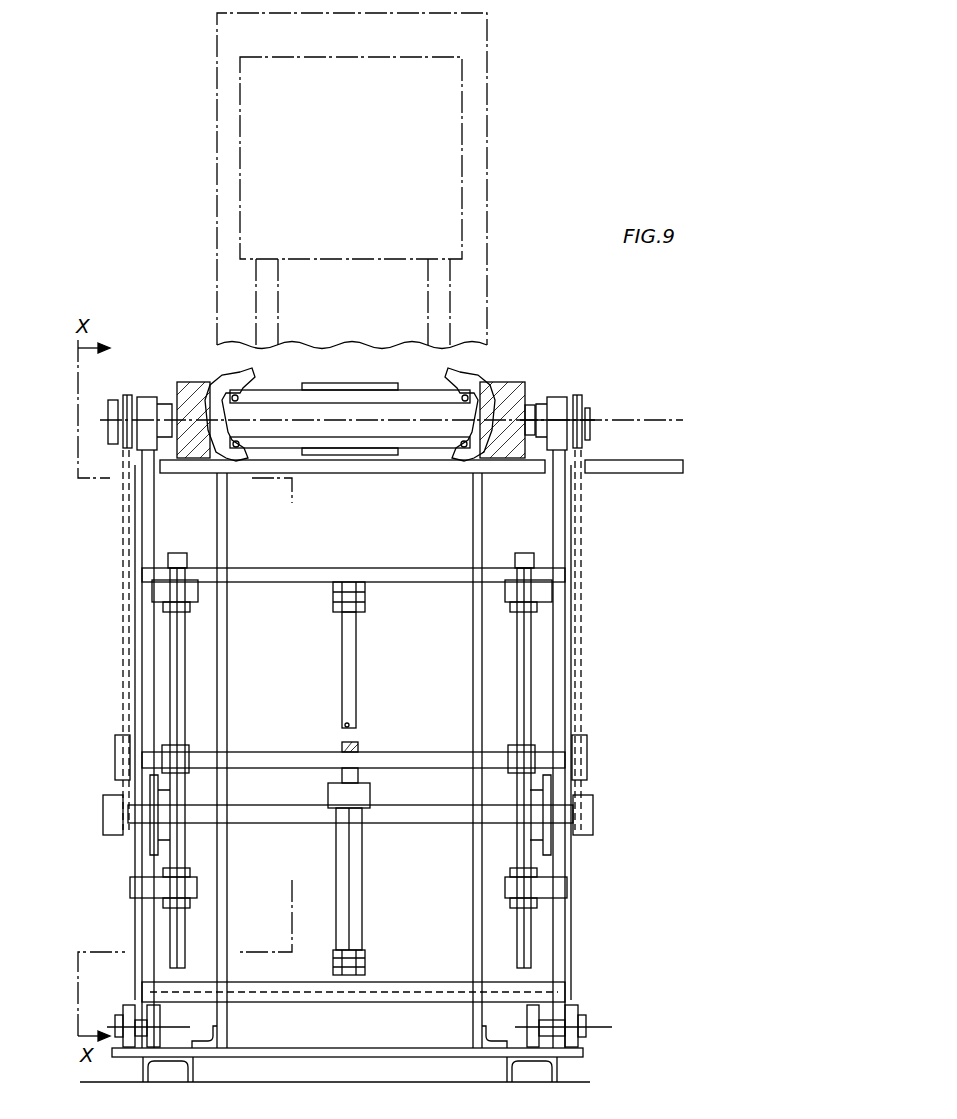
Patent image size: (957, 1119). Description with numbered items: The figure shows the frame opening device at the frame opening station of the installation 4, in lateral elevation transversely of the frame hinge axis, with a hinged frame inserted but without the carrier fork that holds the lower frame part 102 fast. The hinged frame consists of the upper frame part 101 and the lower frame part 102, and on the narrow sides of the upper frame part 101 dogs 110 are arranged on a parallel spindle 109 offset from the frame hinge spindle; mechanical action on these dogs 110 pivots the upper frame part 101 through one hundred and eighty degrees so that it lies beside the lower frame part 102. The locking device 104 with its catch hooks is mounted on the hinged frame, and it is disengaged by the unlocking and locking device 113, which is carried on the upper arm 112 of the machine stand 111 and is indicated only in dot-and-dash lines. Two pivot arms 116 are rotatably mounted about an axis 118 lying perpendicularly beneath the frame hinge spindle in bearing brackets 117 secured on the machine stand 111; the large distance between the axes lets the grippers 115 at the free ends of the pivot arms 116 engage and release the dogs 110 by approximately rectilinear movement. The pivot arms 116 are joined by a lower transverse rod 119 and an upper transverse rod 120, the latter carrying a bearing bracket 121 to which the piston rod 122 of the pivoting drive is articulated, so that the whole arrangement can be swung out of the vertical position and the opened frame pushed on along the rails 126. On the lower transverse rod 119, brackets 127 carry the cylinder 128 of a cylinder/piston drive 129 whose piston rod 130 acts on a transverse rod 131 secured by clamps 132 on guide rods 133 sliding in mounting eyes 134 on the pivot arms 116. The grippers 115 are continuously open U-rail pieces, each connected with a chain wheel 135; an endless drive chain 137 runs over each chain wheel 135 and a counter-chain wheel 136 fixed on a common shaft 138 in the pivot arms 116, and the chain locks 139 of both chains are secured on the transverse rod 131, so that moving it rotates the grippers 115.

The installation 4 is at (526, 380).
The upper frame part 101 is at (505, 392).
The lower frame part 102 is at (528, 398).
The locking device 104 is at (205, 370).
The parallel spindle 109 is at (663, 420).
The dogs 110 is at (588, 421).
The machine stand 111 is at (228, 652).
The upper arm 112 is at (482, 192).
The unlocking and locking device 113 is at (442, 300).
The grippers 115 is at (162, 397).
The pivot arms 116 is at (140, 660).
The bearing brackets 117 is at (155, 1010).
The axis 118 is at (598, 1030).
The lower transverse rod 119 is at (383, 1003).
The upper transverse rod 120 is at (362, 568).
The bearing bracket 121 is at (367, 601).
The piston rod 122 is at (357, 648).
The rails 126 is at (418, 474).
The brackets 127 is at (367, 955).
The cylinder 128 is at (360, 908).
The cylinder/piston drive 129 is at (366, 843).
The piston rod 130 is at (358, 778).
The transverse rod 131 is at (390, 752).
The clamps 132 is at (182, 752).
The guide rods 133 is at (178, 660).
The mounting eyes 134 is at (528, 597).
The chain wheel 135 is at (115, 432).
The counter-chain wheel 136 is at (108, 820).
The endless drive chain 137 is at (122, 700).
The common shaft 138 is at (272, 823).
The chain locks 139 is at (115, 745).